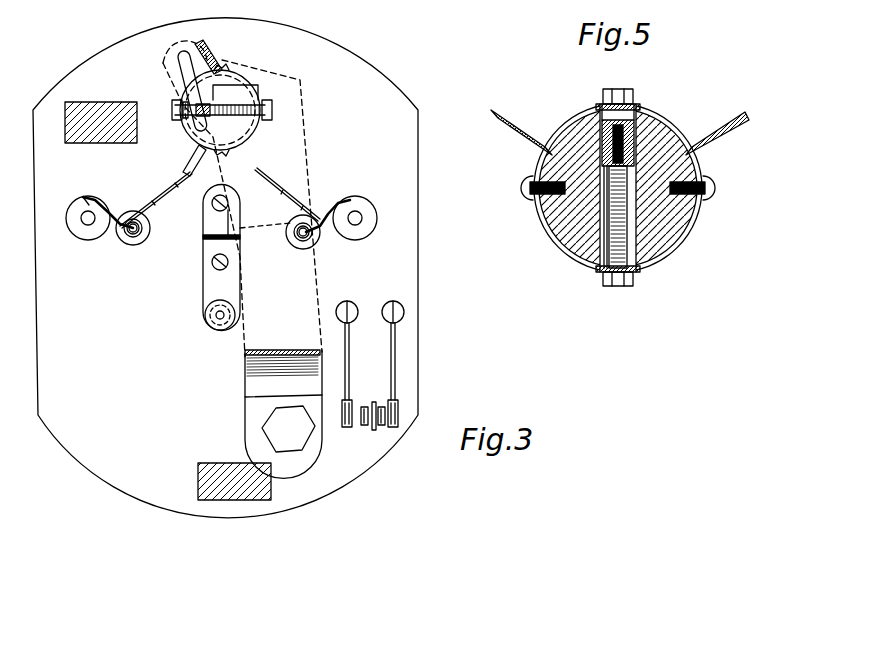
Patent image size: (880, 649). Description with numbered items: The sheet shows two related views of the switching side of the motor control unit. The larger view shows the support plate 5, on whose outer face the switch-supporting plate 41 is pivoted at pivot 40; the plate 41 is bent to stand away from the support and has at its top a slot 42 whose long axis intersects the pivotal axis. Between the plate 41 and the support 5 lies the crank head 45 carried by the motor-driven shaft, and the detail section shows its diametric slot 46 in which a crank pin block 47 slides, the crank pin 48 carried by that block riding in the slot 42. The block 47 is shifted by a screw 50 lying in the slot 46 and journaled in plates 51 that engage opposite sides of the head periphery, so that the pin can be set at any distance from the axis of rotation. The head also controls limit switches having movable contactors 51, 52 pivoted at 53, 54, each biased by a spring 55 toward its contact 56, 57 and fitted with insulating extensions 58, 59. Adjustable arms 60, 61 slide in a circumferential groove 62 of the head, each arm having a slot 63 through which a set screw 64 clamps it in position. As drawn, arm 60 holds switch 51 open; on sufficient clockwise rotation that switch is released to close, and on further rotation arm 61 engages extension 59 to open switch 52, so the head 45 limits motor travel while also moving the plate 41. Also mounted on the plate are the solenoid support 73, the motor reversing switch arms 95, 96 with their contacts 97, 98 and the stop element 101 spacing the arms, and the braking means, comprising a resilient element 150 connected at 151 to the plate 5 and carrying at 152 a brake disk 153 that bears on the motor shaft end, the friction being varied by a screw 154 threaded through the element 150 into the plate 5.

In FIG. 3, the support plate 5 is at (366, 80).
In FIG. 3, the pivot 40 is at (282, 433).
In FIG. 3, the switch-supporting plate 41 is at (166, 57).
In FIG. 3, the slot 42 is at (178, 70).
In FIG. 3, the crank head 45 is at (240, 80).
In FIG. 5, the crank head 45 is at (686, 125).
In FIG. 3, the diametric slot 46 is at (262, 118).
In FIG. 5, the diametric slot 46 is at (632, 240).
In FIG. 3, the crank pin block 47 is at (215, 118).
In FIG. 5, the crank pin block 47 is at (600, 146).
In FIG. 3, the crank pin 48 is at (194, 114).
In FIG. 5, the crank pin 48 is at (630, 128).
In FIG. 3, the screw 50 is at (258, 95).
In FIG. 5, the screw 50 is at (620, 210).
In FIG. 3, the plates / movable contactor 51 is at (97, 204).
In FIG. 5, the plates / movable contactor 51 is at (632, 106).
In FIG. 3, the movable contactor 52 is at (345, 205).
In FIG. 3, the pivot 53 is at (134, 236).
In FIG. 3, the pivot 54 is at (300, 240).
In FIG. 3, the spring 55 is at (125, 240).
In FIG. 3, the contact 56 is at (84, 224).
In FIG. 3, the contact 57 is at (362, 223).
In FIG. 3, the extension 58 is at (186, 190).
In FIG. 3, the extension 59 is at (276, 180).
In FIG. 3, the adjustable arm 60 is at (189, 162).
In FIG. 5, the adjustable arm 60 is at (500, 124).
In FIG. 3, the adjustable arm 61 is at (206, 53).
In FIG. 5, the adjustable arm 61 is at (745, 122).
In FIG. 5, the circumferential groove 62 is at (697, 142).
In FIG. 5, the slot 63 is at (697, 222).
In FIG. 3, the set screw 64 is at (224, 66).
In FIG. 5, the set screw 64 is at (524, 196).
In FIG. 3, the solenoid support 73 is at (83, 105).
In FIG. 3, the switch arm 95 is at (363, 428).
In FIG. 3, the switch arm 96 is at (381, 428).
In FIG. 3, the motor reversing contact 97 is at (343, 363).
In FIG. 3, the motor reversing contact 98 is at (391, 358).
In FIG. 3, the stop element 101 is at (375, 430).
In FIG. 3, the resilient element 150 is at (210, 278).
In FIG. 3, the connection 151 is at (215, 206).
In FIG. 3, the securing point 152 is at (216, 314).
In FIG. 3, the brake disk 153 is at (206, 320).
In FIG. 3, the screw 154 is at (211, 263).